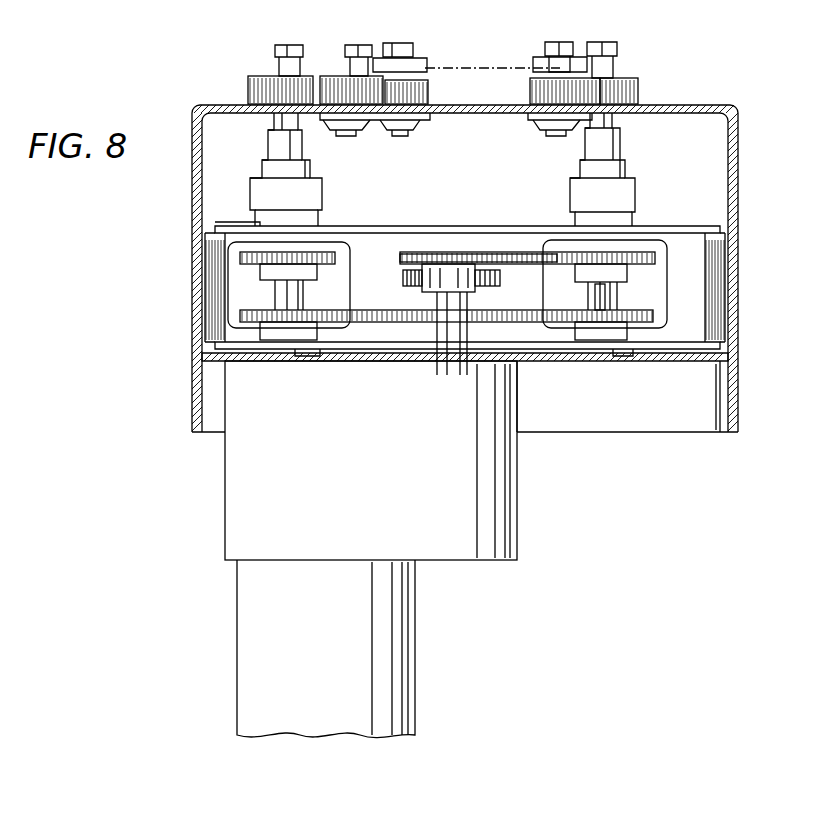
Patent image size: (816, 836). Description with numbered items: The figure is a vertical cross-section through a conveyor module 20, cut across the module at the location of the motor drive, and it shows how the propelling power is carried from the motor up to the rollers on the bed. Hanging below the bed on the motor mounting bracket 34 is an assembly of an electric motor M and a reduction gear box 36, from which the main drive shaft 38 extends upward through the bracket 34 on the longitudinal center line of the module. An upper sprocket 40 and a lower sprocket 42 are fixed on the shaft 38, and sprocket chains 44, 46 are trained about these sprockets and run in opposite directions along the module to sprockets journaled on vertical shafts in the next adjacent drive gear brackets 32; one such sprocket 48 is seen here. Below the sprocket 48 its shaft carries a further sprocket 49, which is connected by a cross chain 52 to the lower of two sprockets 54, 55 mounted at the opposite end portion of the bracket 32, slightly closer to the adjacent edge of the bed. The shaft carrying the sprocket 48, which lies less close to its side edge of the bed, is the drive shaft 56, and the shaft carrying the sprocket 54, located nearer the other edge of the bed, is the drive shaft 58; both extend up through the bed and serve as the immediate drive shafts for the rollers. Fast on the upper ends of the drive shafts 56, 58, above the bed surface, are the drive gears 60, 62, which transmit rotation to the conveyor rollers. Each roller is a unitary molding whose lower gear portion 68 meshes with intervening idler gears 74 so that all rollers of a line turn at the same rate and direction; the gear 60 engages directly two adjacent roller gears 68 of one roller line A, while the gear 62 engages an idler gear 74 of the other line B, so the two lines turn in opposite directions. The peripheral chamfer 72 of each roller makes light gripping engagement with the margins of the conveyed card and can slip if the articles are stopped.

The module 20 is at (742, 212).
The drive gear bracket 32 is at (705, 228).
The motor mounting bracket 34 is at (700, 362).
The reduction gear box 36 is at (380, 496).
The main drive shaft 38 is at (448, 345).
The upper sprocket 40 is at (440, 268).
The lower sprocket 42 is at (447, 252).
The sprocket chain 44 is at (483, 250).
The sprocket chain 46 is at (403, 272).
The sprocket 48 is at (635, 252).
The sprocket 49 is at (640, 308).
The cross chain 52 is at (372, 322).
The sprocket 54 is at (253, 310).
The sprocket 55 is at (243, 228).
The drive shaft 56 is at (614, 118).
The drive shaft 58 is at (272, 118).
The drive gear 60 is at (640, 92).
The drive gear 62 is at (250, 82).
The gear portion 68 is at (533, 88).
The chamfer 72 is at (508, 64).
The idler gear 74 is at (334, 77).
The roller line A is at (584, 32).
The roller line B is at (380, 30).
The electric motor M is at (320, 645).